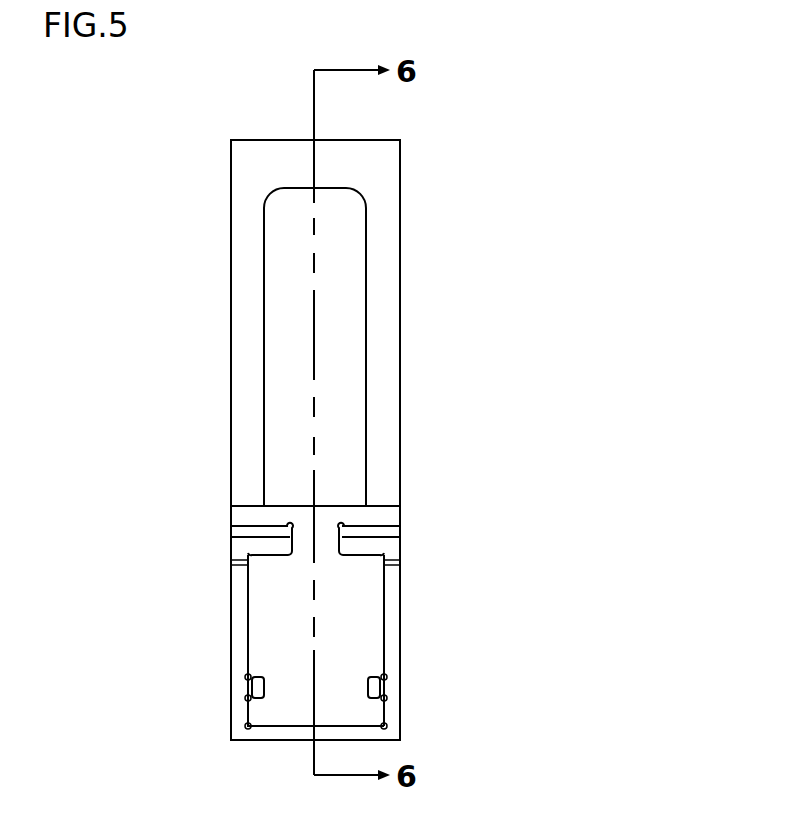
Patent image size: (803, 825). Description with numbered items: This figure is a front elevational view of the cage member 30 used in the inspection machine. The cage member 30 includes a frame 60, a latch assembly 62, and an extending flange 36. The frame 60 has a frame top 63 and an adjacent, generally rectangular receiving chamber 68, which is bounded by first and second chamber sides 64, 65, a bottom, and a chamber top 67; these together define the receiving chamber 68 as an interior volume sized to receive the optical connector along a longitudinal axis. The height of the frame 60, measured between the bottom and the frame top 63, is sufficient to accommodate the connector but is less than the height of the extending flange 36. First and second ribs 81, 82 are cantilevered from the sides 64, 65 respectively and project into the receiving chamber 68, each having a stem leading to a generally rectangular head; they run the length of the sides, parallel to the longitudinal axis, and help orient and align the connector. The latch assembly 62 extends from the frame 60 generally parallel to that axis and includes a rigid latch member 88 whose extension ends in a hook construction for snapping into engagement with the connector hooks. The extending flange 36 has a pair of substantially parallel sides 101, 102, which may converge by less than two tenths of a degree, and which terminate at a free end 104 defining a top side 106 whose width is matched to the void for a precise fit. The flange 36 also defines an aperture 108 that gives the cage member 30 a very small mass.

The cage member 30 is at (497, 166).
The extending flange 36 is at (416, 273).
The frame 60 is at (230, 590).
The latch assembly 62 is at (378, 526).
The frame top 63 is at (253, 505).
The first chamber side 64 is at (240, 645).
The second chamber side 65 is at (402, 622).
The chamber top 67 is at (250, 525).
The receiving chamber 68 is at (383, 640).
The first rib 81 is at (265, 682).
The second rib 82 is at (367, 687).
The latch member 88 is at (387, 515).
The first side of extending flange 101 is at (230, 305).
The second side of extending flange 102 is at (400, 315).
The free end 104 is at (265, 139).
The top side 106 is at (358, 139).
The aperture 108 is at (365, 383).